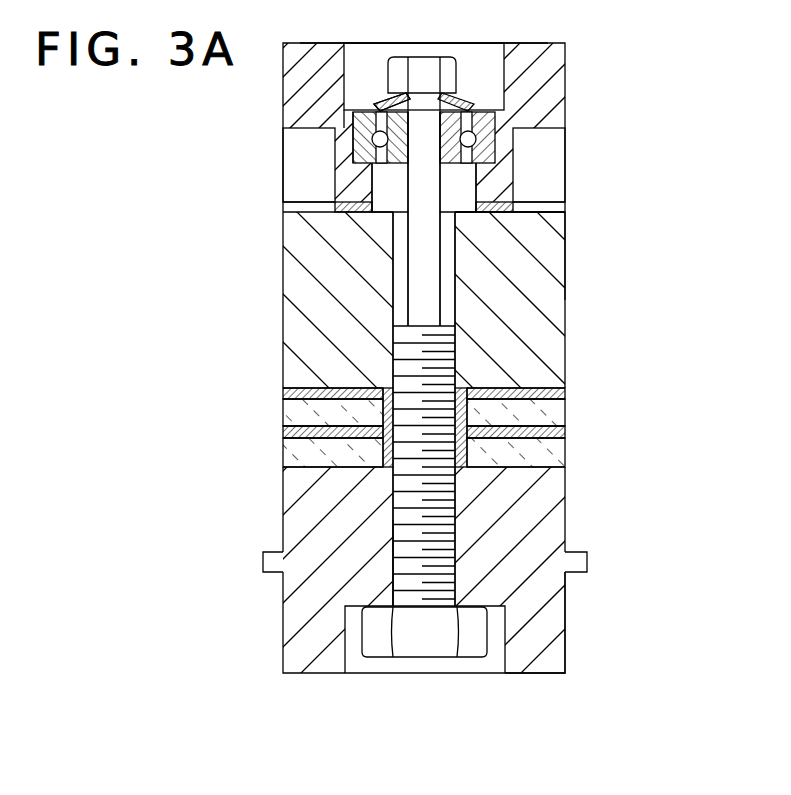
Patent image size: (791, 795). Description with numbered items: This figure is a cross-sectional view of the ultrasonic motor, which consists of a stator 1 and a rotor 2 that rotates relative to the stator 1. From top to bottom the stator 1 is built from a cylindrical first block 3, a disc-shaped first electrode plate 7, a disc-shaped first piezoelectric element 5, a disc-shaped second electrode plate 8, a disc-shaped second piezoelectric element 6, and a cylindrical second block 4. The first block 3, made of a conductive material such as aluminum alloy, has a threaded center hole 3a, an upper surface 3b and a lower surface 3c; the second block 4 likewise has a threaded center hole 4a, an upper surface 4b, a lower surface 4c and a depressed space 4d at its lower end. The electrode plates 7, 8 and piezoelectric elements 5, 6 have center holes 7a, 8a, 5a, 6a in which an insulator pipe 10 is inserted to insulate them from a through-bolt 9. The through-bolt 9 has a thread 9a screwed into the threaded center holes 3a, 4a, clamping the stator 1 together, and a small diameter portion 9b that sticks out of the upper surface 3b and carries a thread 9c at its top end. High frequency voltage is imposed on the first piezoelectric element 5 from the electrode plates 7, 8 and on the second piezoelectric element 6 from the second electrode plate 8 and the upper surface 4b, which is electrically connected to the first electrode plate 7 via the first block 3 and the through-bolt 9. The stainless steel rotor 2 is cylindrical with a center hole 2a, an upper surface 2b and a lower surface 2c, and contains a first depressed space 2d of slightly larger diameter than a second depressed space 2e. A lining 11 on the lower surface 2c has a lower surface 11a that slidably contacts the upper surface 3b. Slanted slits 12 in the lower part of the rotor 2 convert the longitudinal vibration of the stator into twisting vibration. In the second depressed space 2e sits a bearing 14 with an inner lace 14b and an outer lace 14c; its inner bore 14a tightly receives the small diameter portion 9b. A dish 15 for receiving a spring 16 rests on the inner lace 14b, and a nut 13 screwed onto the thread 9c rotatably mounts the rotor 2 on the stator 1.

The stator 1 is at (619, 338).
The rotor 2 is at (553, 78).
The center hole 2a is at (530, 243).
The upper surface 2b is at (537, 43).
The lower surface 2c is at (283, 200).
The first depressed space 2d is at (495, 56).
The second depressed space 2e is at (354, 126).
The first block 3 is at (558, 350).
The threaded center hole 3a is at (458, 337).
The upper surface 3b is at (283, 208).
The lower surface 3c is at (388, 397).
The second block 4 is at (560, 492).
The threaded center hole 4a is at (455, 522).
The upper surface 4b is at (384, 441).
The lower surface 4c is at (552, 676).
The depressed space 4d is at (505, 667).
The first piezoelectric element 5 is at (553, 410).
The center hole 5a is at (380, 404).
The second piezoelectric element 6 is at (554, 460).
The center hole 6a is at (458, 474).
The first electrode plate 7 is at (560, 380).
The center hole 7a is at (470, 378).
The second electrode plate 8 is at (560, 433).
The center hole 8a is at (381, 473).
The through-bolt 9 is at (466, 571).
The thread 9a is at (405, 540).
The small diameter portion 9b is at (415, 297).
The thread 9c is at (431, 104).
The insulator pipe 10 is at (386, 388).
The lining 11 is at (556, 209).
The lower surface 11a is at (548, 212).
The slit 12 is at (287, 138).
The nut 13 is at (425, 65).
The bearing 14 is at (477, 106).
The inner bore 14a is at (372, 168).
The inner lace 14b is at (499, 172).
The outer lace 14c is at (514, 146).
The dish 15 is at (375, 107).
The spring 16 is at (390, 101).